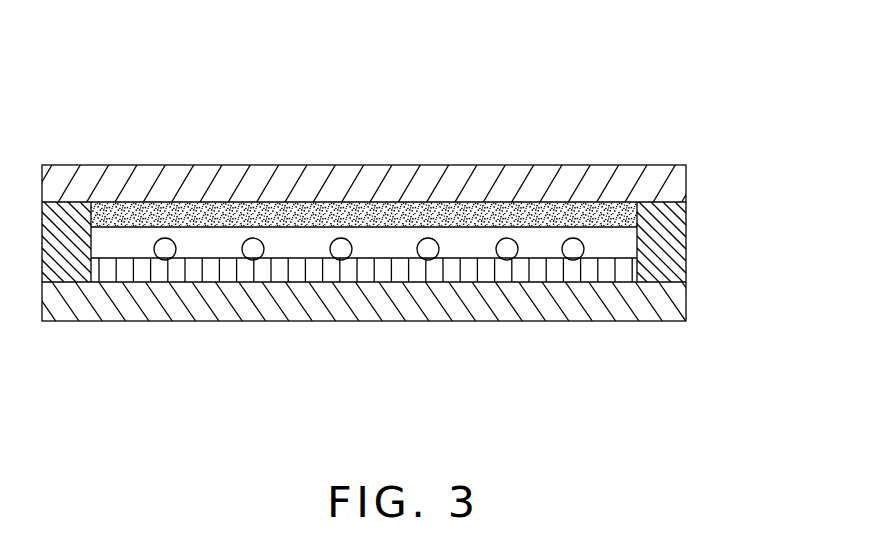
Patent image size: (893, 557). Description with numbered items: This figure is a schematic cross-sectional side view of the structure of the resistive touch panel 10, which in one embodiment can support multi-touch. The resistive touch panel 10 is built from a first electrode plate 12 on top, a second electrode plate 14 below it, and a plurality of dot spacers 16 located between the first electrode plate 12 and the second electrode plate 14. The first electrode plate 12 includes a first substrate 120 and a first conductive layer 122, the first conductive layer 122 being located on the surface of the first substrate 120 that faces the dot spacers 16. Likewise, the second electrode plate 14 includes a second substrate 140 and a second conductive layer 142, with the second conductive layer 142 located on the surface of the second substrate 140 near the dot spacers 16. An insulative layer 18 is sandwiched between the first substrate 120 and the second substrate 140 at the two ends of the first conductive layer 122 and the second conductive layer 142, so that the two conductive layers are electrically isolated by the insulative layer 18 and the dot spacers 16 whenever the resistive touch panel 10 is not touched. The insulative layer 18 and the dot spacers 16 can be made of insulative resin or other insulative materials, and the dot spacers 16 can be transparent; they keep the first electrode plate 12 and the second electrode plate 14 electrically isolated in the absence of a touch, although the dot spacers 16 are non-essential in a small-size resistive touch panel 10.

The resistive touch panel 10 is at (268, 57).
The first electrode plate 12 is at (400, 174).
The first substrate 120 is at (658, 173).
The first conductive layer 122 is at (623, 216).
The second electrode plate 14 is at (417, 290).
The second substrate 140 is at (657, 308).
The second conductive layer 142 is at (627, 271).
The dot spacers 16 is at (205, 250).
The insulative layer 18 is at (675, 246).